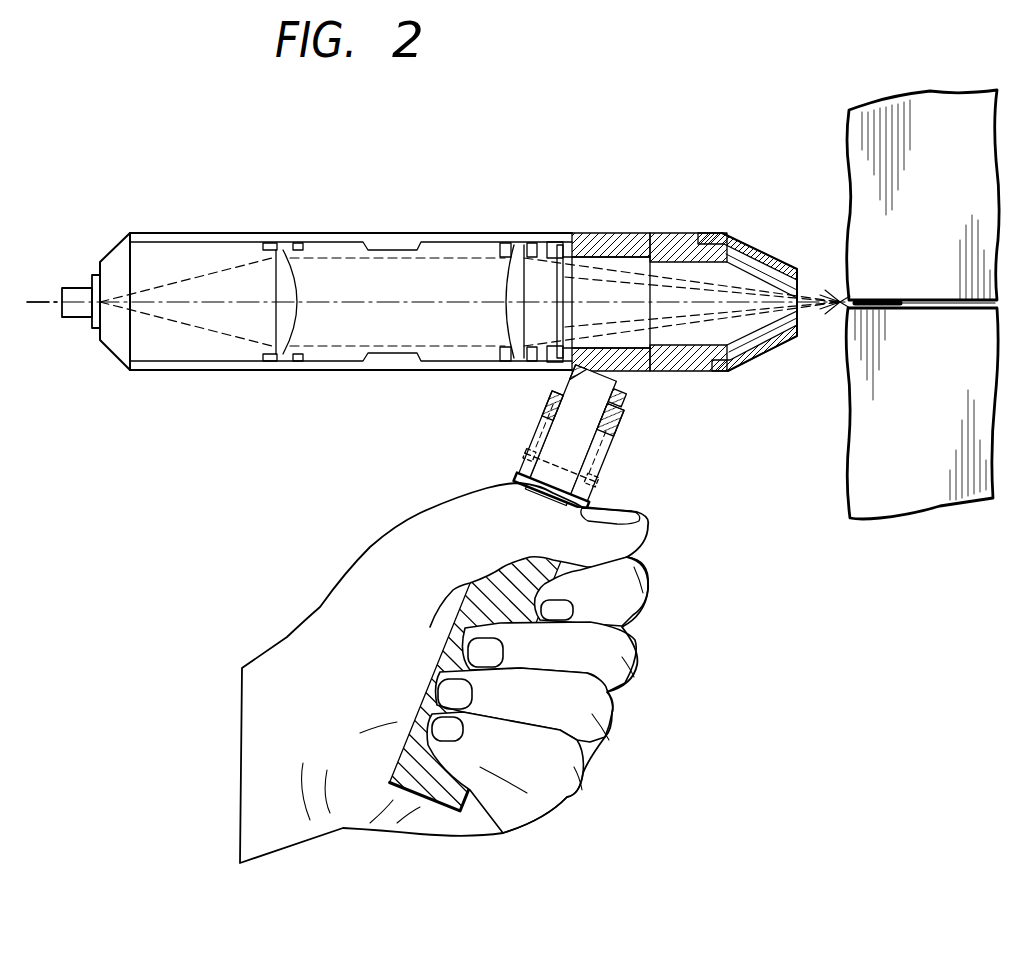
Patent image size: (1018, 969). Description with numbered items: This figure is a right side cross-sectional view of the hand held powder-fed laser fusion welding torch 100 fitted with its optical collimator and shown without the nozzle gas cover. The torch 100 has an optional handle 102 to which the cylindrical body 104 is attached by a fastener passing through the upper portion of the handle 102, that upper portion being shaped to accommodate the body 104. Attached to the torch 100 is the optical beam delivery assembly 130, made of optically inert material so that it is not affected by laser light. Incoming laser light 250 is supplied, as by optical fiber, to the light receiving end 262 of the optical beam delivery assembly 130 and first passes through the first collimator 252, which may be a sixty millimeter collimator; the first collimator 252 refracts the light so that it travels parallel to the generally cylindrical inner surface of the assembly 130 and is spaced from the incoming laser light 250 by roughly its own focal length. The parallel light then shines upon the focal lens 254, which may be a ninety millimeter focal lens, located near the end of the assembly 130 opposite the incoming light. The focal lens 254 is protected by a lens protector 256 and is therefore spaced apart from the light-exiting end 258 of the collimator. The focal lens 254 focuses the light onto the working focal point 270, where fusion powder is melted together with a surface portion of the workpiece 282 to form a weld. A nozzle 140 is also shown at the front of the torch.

The hand held powder-fed laser fusion welding torch 100 is at (636, 400).
The handle 102 is at (447, 778).
The body 104 is at (633, 373).
The optical beam delivery assembly 130 is at (180, 233).
The nozzle 140 is at (721, 233).
The incoming laser light 250 is at (52, 305).
The first collimator 252 is at (284, 277).
The focal lens 254 is at (517, 278).
The lens protector 256 is at (566, 272).
The light-exiting end 258 is at (582, 325).
The light receiving end 262 is at (96, 285).
The working focal point 270 is at (843, 300).
The workpiece 282 is at (907, 300).